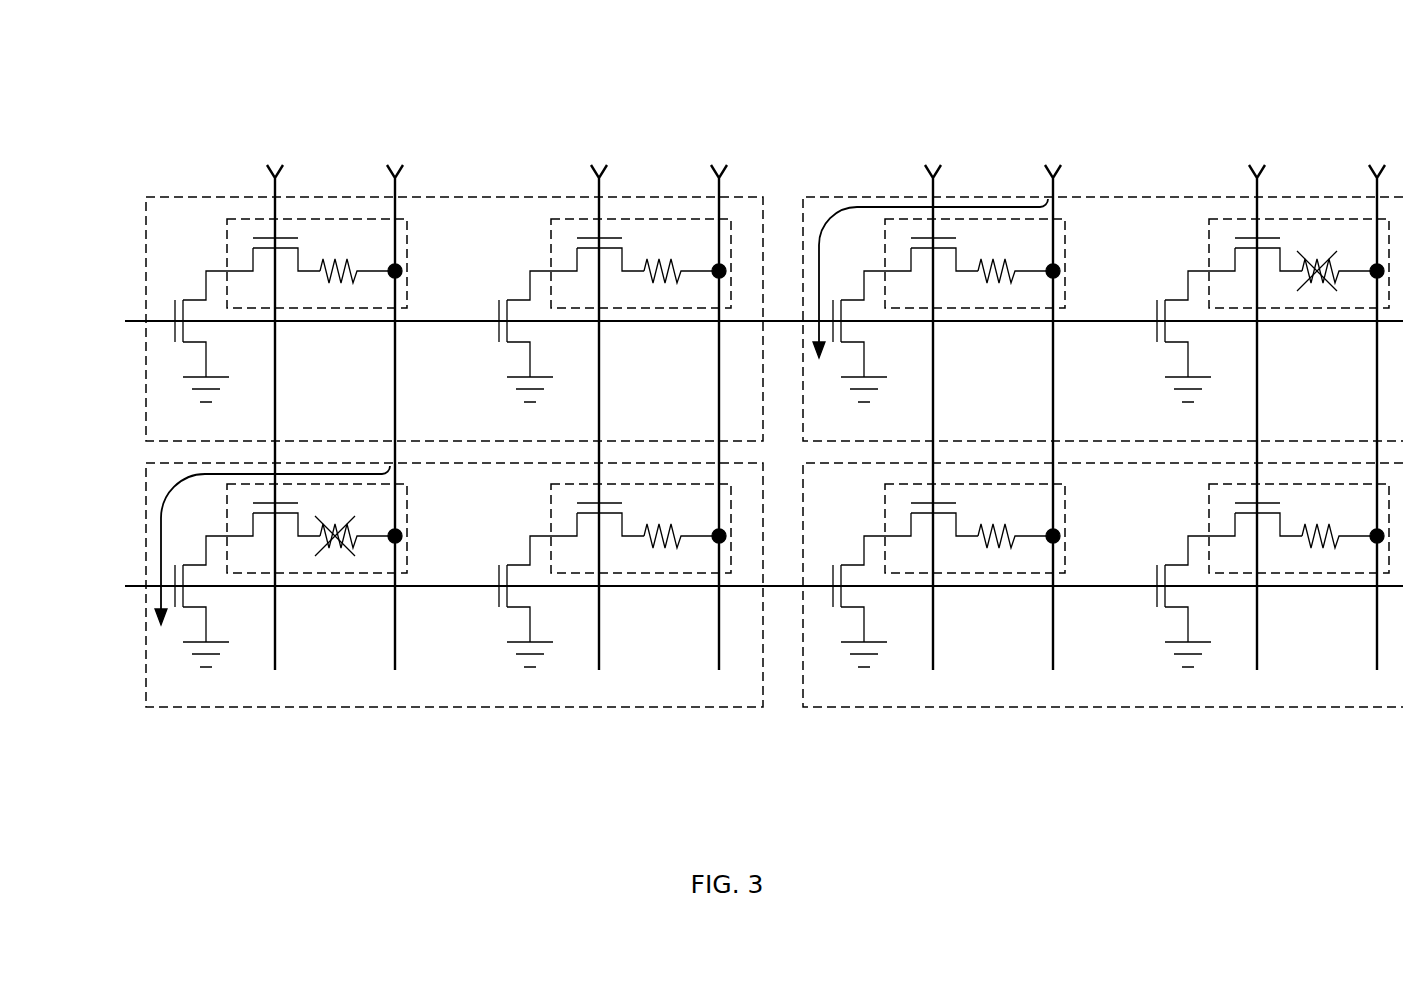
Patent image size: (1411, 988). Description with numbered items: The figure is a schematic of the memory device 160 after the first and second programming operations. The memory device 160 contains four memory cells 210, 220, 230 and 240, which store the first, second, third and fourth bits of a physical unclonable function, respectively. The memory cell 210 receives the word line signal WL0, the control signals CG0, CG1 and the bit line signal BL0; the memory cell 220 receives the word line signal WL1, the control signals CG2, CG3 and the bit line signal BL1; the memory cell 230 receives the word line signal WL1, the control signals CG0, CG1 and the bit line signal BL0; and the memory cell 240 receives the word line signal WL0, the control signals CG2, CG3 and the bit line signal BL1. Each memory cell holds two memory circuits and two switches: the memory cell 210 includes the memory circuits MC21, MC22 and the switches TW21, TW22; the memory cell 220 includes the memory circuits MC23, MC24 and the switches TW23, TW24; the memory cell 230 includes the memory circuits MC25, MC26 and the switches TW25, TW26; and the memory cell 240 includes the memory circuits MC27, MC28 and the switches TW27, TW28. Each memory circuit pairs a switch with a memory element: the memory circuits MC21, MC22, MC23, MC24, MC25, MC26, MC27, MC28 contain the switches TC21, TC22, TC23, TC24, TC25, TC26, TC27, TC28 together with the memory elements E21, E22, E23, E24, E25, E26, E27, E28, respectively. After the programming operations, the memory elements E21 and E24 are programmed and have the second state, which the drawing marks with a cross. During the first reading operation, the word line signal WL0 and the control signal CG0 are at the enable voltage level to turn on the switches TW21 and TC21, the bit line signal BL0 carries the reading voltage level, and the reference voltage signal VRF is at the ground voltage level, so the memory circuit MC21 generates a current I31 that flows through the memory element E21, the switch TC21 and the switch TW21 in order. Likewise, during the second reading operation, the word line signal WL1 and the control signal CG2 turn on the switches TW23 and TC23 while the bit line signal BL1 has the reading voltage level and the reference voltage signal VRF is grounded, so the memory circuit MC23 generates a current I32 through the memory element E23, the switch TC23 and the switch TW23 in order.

The memory device 160 is at (63, 70).
The memory cell 230 is at (163, 197).
The memory cell 220 is at (821, 197).
The memory cell 210 is at (165, 708).
The memory cell 240 is at (822, 708).
The word line signal WL0 is at (115, 578).
The word line signal WL1 is at (115, 313).
The control signal CG0 is at (275, 402).
The control signal CG1 is at (599, 402).
The control signal CG2 is at (933, 402).
The control signal CG3 is at (1257, 402).
The bit line signal BL0 is at (557, 402).
The bit line signal BL1 is at (1215, 402).
The current I31 is at (160, 502).
The current I32 is at (866, 207).
The memory circuit MC21 is at (407, 502).
The memory circuit MC22 is at (551, 523).
The memory circuit MC23 is at (1065, 237).
The memory circuit MC24 is at (1209, 258).
The memory circuit MC25 is at (407, 237).
The memory circuit MC26 is at (551, 258).
The memory circuit MC27 is at (1065, 502).
The memory circuit MC28 is at (1209, 523).
The switch TC21 is at (251, 535).
The switch TC22 is at (575, 535).
The switch TC23 is at (909, 270).
The switch TC24 is at (1233, 270).
The switch TC25 is at (251, 270).
The switch TC26 is at (575, 270).
The switch TC27 is at (909, 535).
The switch TC28 is at (1233, 535).
The memory element E21 is at (358, 523).
The memory element E22 is at (682, 519).
The memory element E23 is at (1016, 254).
The memory element E24 is at (1340, 258).
The memory element E25 is at (358, 254).
The memory element E26 is at (682, 254).
The memory element E27 is at (1016, 519).
The memory element E28 is at (1340, 519).
The switch TW21 is at (225, 603).
The switch TW22 is at (549, 603).
The switch TW23 is at (883, 338).
The switch TW24 is at (1207, 338).
The switch TW25 is at (225, 338).
The switch TW26 is at (549, 338).
The switch TW27 is at (883, 603).
The switch TW28 is at (1207, 603).
The reference voltage signal VRF is at (696, 538).